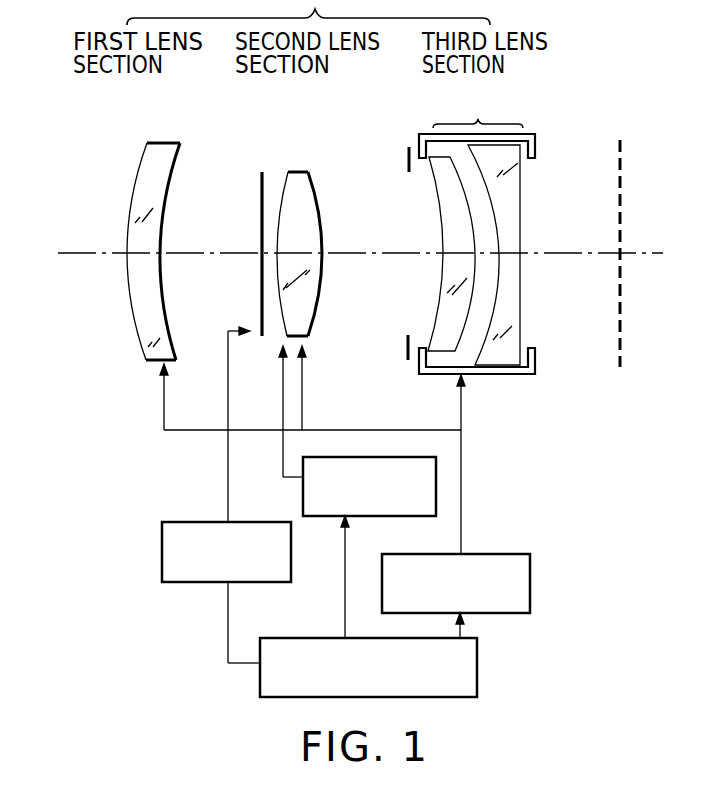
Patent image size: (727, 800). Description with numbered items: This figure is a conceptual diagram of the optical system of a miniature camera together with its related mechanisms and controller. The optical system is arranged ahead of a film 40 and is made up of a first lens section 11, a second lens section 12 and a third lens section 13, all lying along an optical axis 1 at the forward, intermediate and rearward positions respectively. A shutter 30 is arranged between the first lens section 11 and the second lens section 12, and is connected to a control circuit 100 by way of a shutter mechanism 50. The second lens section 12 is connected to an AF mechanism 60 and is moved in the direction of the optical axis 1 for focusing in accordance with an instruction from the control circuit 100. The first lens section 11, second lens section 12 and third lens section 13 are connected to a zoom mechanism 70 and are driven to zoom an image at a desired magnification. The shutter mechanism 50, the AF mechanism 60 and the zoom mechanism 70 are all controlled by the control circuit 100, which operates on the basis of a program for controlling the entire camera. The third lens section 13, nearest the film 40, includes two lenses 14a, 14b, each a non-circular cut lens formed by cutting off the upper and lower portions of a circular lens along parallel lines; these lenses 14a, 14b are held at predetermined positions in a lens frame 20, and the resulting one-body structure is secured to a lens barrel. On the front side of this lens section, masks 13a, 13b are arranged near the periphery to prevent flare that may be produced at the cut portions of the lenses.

The optical axis 1 is at (81, 252).
The first lens section 11 is at (148, 143).
The second lens section 12 is at (303, 178).
The third lens section 13 is at (477, 123).
The mask 13a is at (405, 160).
The mask 13b is at (405, 345).
The lens 14a is at (443, 237).
The lens 14b is at (520, 190).
The lens frame 20 is at (497, 374).
The shutter 30 is at (262, 172).
The film 40 is at (622, 150).
The shutter mechanism 50 is at (172, 582).
The AF mechanism 60 is at (377, 517).
The zoom mechanism 70 is at (523, 554).
The control circuit 100 is at (477, 663).